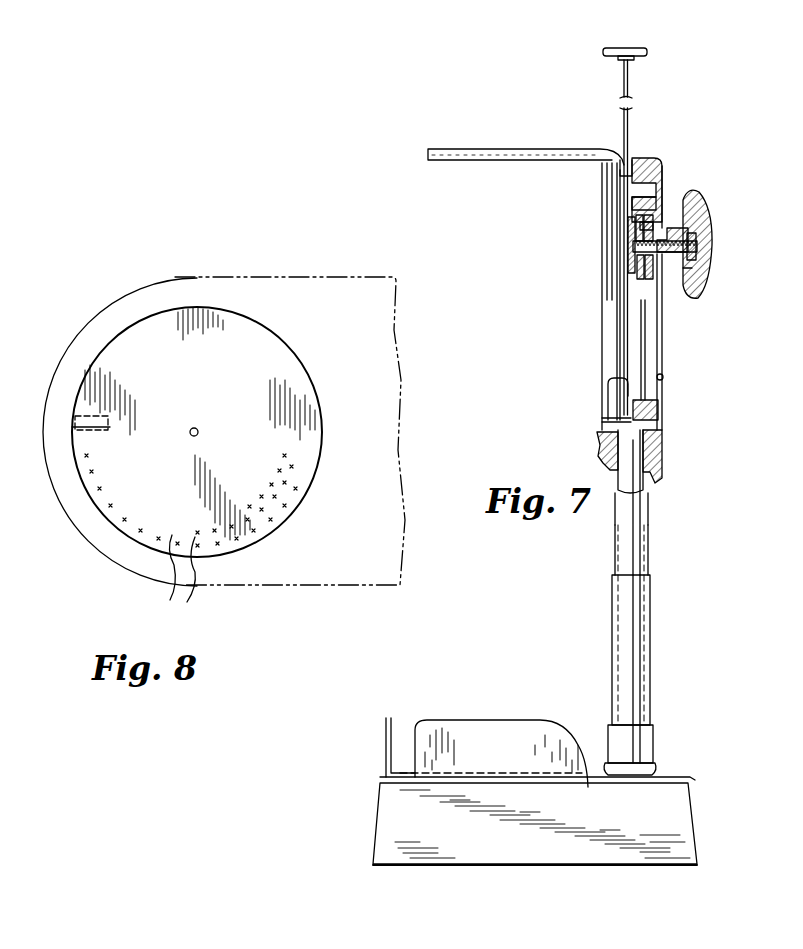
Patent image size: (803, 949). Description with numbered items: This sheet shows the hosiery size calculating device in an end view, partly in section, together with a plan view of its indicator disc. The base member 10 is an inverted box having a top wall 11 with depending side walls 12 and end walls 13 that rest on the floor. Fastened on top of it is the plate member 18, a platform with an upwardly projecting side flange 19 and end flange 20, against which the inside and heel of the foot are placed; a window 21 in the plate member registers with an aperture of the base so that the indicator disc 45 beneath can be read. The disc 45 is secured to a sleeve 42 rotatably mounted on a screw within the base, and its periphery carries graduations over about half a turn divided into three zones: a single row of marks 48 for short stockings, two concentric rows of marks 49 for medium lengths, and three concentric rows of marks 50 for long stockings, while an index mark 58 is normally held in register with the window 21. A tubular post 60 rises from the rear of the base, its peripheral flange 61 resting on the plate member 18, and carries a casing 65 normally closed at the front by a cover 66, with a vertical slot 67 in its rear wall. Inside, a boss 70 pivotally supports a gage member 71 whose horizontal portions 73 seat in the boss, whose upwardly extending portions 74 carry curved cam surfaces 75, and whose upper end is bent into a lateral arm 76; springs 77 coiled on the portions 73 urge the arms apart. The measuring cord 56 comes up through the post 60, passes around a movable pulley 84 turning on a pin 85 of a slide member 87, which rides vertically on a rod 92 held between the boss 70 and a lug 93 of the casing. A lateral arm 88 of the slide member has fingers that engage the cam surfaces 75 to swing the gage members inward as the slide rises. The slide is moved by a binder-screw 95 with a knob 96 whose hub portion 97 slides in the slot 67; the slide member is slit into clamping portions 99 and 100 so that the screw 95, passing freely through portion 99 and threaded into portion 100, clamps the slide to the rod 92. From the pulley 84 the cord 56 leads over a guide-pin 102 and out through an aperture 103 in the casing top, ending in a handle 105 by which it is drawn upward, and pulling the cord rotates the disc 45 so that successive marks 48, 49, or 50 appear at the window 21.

In FIG. 7, the base member 10 is at (380, 815).
In FIG. 8, the base member 10 is at (375, 278).
In FIG. 7, the top wall 11 is at (516, 773).
In FIG. 7, the side walls 12 is at (375, 846).
In FIG. 7, the end walls 13 is at (517, 866).
In FIG. 7, the plate member 18 is at (401, 770).
In FIG. 7, the side flange 19 is at (384, 742).
In FIG. 7, the end flange 20 is at (471, 730).
In FIG. 8, the window 21 is at (70, 450).
In FIG. 8, the sleeve 42 is at (199, 430).
In FIG. 8, the indicator disc 45 is at (291, 347).
In FIG. 8, the marks 48 is at (117, 499).
In FIG. 8, the marks 49 is at (188, 576).
In FIG. 8, the marks 50 is at (296, 449).
In FIG. 7, the cord 56 is at (650, 173).
In FIG. 8, the index mark 58 is at (75, 422).
In FIG. 7, the tubular post 60 is at (652, 697).
In FIG. 7, the peripheral flange 61 is at (655, 766).
In FIG. 7, the casing 65 is at (665, 190).
In FIG. 7, the cover 66 is at (607, 389).
In FIG. 7, the vertical slot 67 is at (664, 378).
In FIG. 7, the boss 70 is at (660, 408).
In FIG. 7, the gage member 71 is at (598, 334).
In FIG. 7, the horizontal portions 73 is at (660, 433).
In FIG. 7, the upwardly extending portions 74 is at (612, 348).
In FIG. 7, the cam surfaces 75 is at (623, 244).
In FIG. 7, the lateral arms 76 is at (500, 147).
In FIG. 7, the springs 77 is at (605, 421).
In FIG. 7, the pulley 84 is at (628, 266).
In FIG. 7, the pin 85 is at (632, 252).
In FIG. 7, the slide member 87 is at (648, 285).
In FIG. 7, the lateral arm 88 is at (634, 232).
In FIG. 7, the rod 92 is at (648, 343).
In FIG. 7, the lug 93 is at (636, 205).
In FIG. 7, the binder-screw 95 is at (700, 249).
In FIG. 7, the knob 96 is at (702, 218).
In FIG. 7, the hub portion 97 is at (660, 242).
In FIG. 7, the clamping portion 99 is at (696, 271).
In FIG. 7, the clamping portion 100 is at (640, 279).
In FIG. 7, the guide-pin 102 is at (610, 179).
In FIG. 7, the aperture 103 is at (629, 163).
In FIG. 7, the handle 105 is at (646, 52).